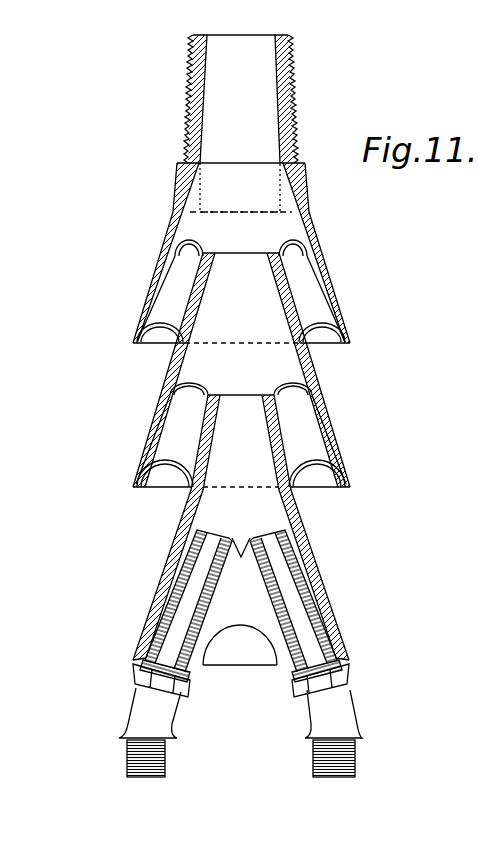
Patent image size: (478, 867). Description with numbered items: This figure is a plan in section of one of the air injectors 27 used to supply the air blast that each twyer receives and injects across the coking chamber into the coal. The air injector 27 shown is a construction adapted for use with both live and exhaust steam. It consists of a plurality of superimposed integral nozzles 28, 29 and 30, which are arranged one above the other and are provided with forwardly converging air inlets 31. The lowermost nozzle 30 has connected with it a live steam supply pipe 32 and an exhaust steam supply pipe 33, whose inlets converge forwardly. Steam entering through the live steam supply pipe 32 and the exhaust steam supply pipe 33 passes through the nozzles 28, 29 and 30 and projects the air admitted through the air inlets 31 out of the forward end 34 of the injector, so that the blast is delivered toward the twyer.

The air injector 27 is at (239, 406).
The nozzle 28 is at (308, 225).
The nozzle 29 is at (320, 405).
The nozzle 30 is at (312, 578).
The air inlets 31 is at (318, 300).
The live steam supply pipe 32 is at (136, 717).
The exhaust steam supply pipe 33 is at (343, 708).
The forward end 34 is at (272, 100).